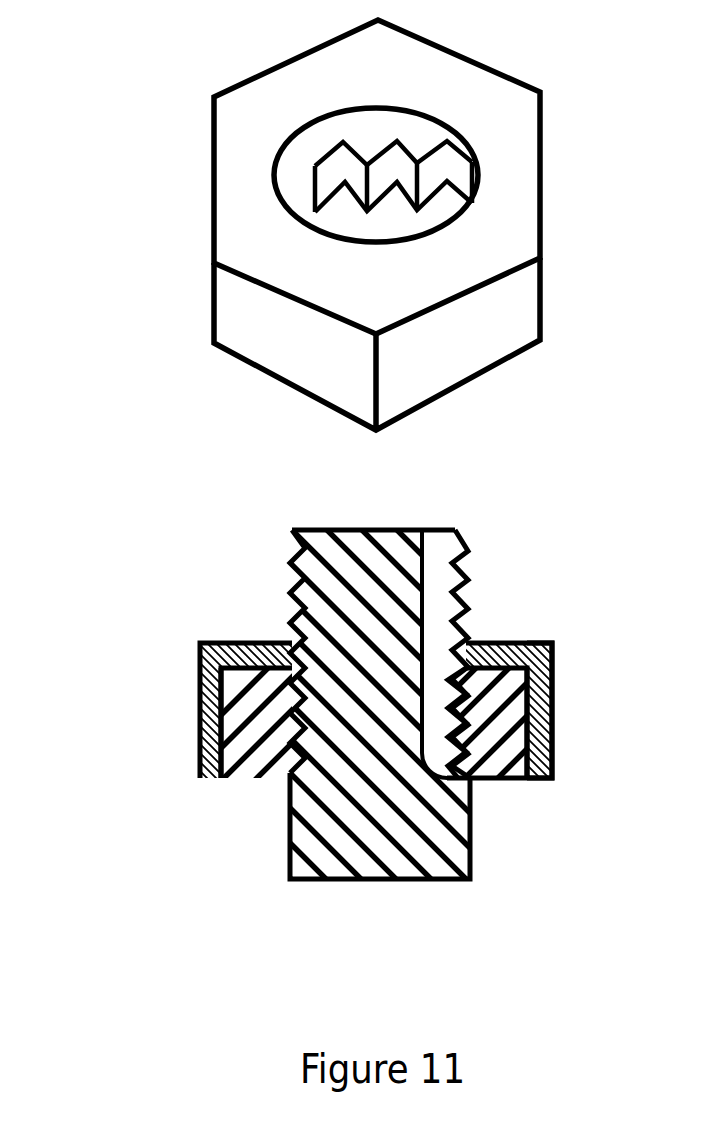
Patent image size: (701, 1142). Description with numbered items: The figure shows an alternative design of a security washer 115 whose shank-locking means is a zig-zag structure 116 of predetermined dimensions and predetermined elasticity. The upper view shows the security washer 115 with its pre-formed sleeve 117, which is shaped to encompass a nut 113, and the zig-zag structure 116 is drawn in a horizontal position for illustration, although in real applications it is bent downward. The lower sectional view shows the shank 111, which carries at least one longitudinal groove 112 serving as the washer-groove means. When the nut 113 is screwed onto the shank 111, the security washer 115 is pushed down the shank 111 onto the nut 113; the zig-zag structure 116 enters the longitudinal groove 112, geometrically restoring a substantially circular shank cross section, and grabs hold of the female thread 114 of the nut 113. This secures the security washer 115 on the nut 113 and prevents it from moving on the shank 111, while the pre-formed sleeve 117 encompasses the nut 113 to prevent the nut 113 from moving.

The shank 111 is at (340, 822).
The longitudinal groove 112 is at (440, 580).
The nut 113 is at (237, 780).
The female thread 114 is at (485, 780).
The security washer 115 is at (240, 181).
The zig-zag structure 116 is at (403, 163).
The pre-formed sleeve 117 is at (293, 357).